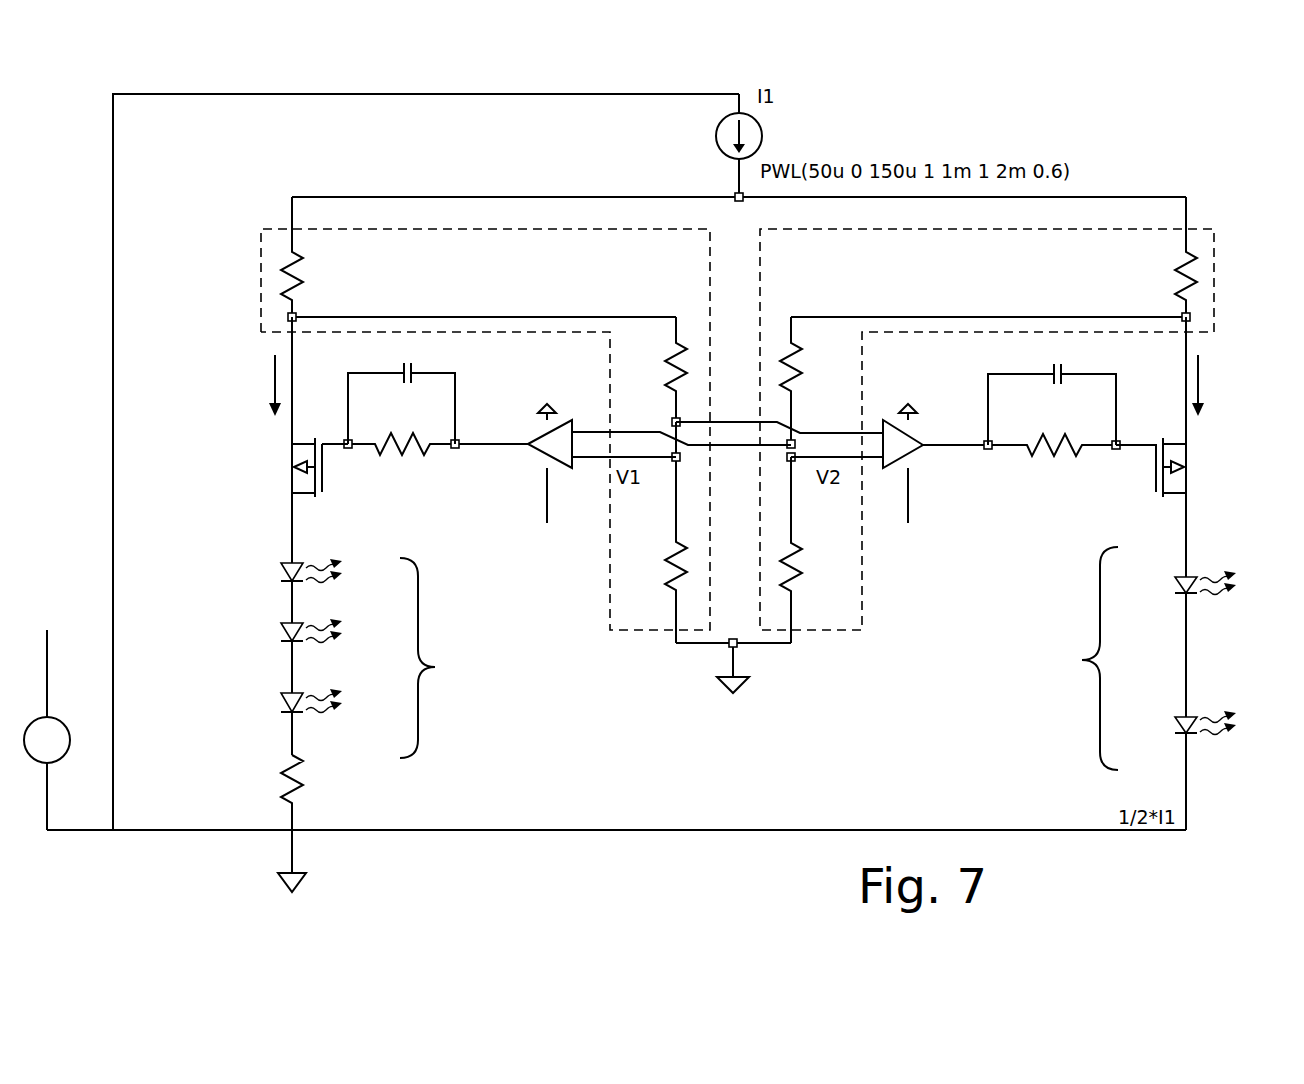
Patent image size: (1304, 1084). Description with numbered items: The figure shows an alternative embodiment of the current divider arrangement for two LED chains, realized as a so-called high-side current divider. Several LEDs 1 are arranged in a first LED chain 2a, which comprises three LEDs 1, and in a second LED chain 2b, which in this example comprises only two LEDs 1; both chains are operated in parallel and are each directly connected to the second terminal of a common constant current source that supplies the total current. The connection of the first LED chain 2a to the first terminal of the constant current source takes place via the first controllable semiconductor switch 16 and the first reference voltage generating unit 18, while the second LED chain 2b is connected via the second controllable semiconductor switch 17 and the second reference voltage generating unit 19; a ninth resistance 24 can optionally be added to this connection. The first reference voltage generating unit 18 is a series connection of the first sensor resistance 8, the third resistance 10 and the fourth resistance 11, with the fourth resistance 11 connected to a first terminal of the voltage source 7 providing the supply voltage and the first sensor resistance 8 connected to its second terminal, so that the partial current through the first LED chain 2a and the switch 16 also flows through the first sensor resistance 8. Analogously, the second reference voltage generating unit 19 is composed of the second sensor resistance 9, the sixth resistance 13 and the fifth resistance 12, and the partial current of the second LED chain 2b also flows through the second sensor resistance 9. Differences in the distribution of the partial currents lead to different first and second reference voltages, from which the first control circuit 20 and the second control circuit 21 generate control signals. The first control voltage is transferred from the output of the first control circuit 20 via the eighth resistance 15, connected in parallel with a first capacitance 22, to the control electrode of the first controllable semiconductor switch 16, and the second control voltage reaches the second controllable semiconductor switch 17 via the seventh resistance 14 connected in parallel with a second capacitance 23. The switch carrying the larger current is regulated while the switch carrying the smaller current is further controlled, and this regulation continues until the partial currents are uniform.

The LED 1 is at (286, 571).
The first LED chain 2a is at (433, 658).
The second LED chain 2b is at (1082, 658).
The voltage source 7 is at (61, 727).
The first sensor resistance 8 is at (300, 273).
The second sensor resistance 9 is at (1180, 273).
The third resistance 10 is at (670, 378).
The fourth resistance 11 is at (672, 572).
The fifth resistance 12 is at (795, 560).
The sixth resistance 13 is at (792, 362).
The feedback resistor 14 is at (1060, 452).
The eighth resistance 15 is at (413, 452).
The first controllable semiconductor switch 16 is at (296, 482).
The second controllable semiconductor switch 17 is at (1182, 485).
The first reference voltage generating unit 18 is at (261, 240).
The second reference voltage generating unit 19 is at (1214, 242).
The first control circuit 20 is at (530, 449).
The second control circuit 21 is at (912, 452).
The first capacitance 22 is at (410, 371).
The second capacitance 23 is at (1060, 369).
The ninth resistance 24 is at (300, 767).